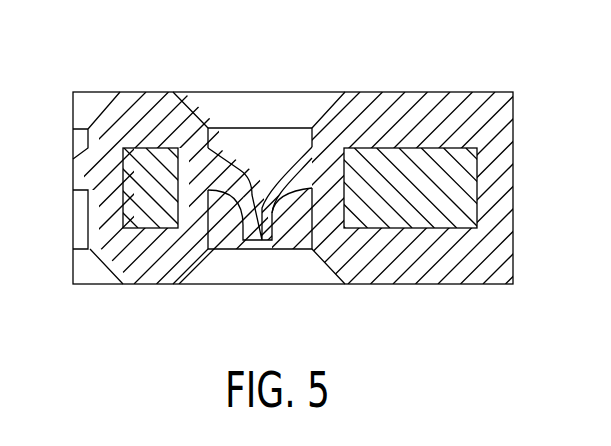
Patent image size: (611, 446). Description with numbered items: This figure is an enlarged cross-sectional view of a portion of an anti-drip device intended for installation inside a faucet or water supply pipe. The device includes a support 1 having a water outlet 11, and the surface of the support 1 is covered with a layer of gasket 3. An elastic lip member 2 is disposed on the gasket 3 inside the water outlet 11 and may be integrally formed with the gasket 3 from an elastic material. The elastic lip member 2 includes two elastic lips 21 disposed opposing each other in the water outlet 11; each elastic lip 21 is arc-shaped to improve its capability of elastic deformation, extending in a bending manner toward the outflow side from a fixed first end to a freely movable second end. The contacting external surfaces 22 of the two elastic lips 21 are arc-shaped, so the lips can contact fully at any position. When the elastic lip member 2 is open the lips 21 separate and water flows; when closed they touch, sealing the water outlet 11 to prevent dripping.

The support 1 is at (422, 181).
The elastic lip member 2 is at (305, 187).
The gasket 3 is at (513, 193).
The water outlet 11 is at (258, 142).
The elastic lips 21 is at (213, 198).
The contacting external surfaces 22 is at (243, 183).